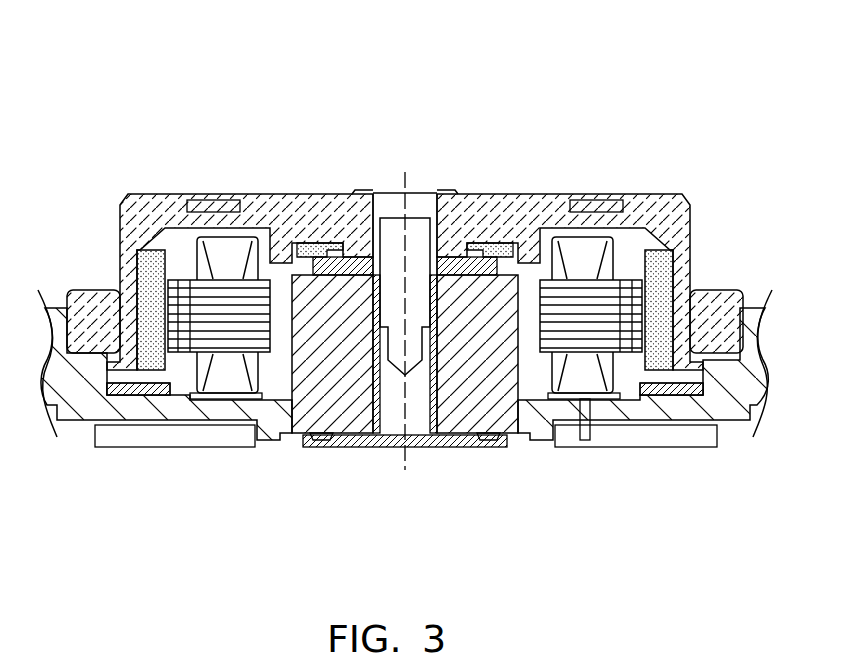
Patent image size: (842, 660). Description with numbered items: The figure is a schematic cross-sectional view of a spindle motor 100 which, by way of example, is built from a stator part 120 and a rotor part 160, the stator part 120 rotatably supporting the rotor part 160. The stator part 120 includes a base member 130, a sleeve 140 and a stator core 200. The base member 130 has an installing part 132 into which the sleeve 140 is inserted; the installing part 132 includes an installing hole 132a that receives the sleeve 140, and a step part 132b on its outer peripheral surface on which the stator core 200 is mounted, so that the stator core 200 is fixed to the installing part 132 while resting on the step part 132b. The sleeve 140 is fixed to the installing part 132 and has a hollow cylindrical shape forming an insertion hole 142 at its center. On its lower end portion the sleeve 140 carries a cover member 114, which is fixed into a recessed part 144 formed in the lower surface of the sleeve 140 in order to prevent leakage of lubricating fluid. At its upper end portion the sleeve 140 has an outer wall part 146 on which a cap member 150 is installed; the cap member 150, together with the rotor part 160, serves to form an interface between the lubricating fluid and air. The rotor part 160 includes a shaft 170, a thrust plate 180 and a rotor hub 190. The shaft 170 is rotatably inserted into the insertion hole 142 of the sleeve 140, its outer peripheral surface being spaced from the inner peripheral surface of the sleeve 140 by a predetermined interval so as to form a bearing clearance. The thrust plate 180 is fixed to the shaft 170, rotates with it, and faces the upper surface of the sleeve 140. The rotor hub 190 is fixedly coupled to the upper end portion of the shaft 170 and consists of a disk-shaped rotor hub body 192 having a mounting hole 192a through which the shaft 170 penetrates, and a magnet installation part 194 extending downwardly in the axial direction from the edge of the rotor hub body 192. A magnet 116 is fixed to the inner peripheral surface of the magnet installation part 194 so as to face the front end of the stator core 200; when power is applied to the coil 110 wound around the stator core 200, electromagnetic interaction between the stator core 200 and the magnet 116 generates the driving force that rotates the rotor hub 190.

The spindle motor 100 is at (428, 53).
The coil 110 is at (643, 441).
The cover member 114 is at (424, 445).
The magnet 116 is at (150, 288).
The stator part 120 is at (249, 447).
The base member 130 is at (138, 410).
The installing part 132 is at (522, 342).
The installing hole 132a is at (515, 440).
The step part 132b is at (582, 399).
The sleeve 140 is at (320, 382).
The insertion hole 142 is at (378, 388).
The recessed part 144 is at (310, 440).
The outer wall part 146 is at (318, 262).
The cap member 150 is at (318, 250).
The rotor part 160 is at (509, 172).
The shaft 170 is at (430, 414).
The thrust plate 180 is at (350, 268).
The rotor hub 190 is at (678, 85).
The rotor hub body 192 is at (543, 205).
The mounting hole 192a is at (427, 232).
The magnet installation part 194 is at (687, 252).
The stator core 200 is at (198, 292).